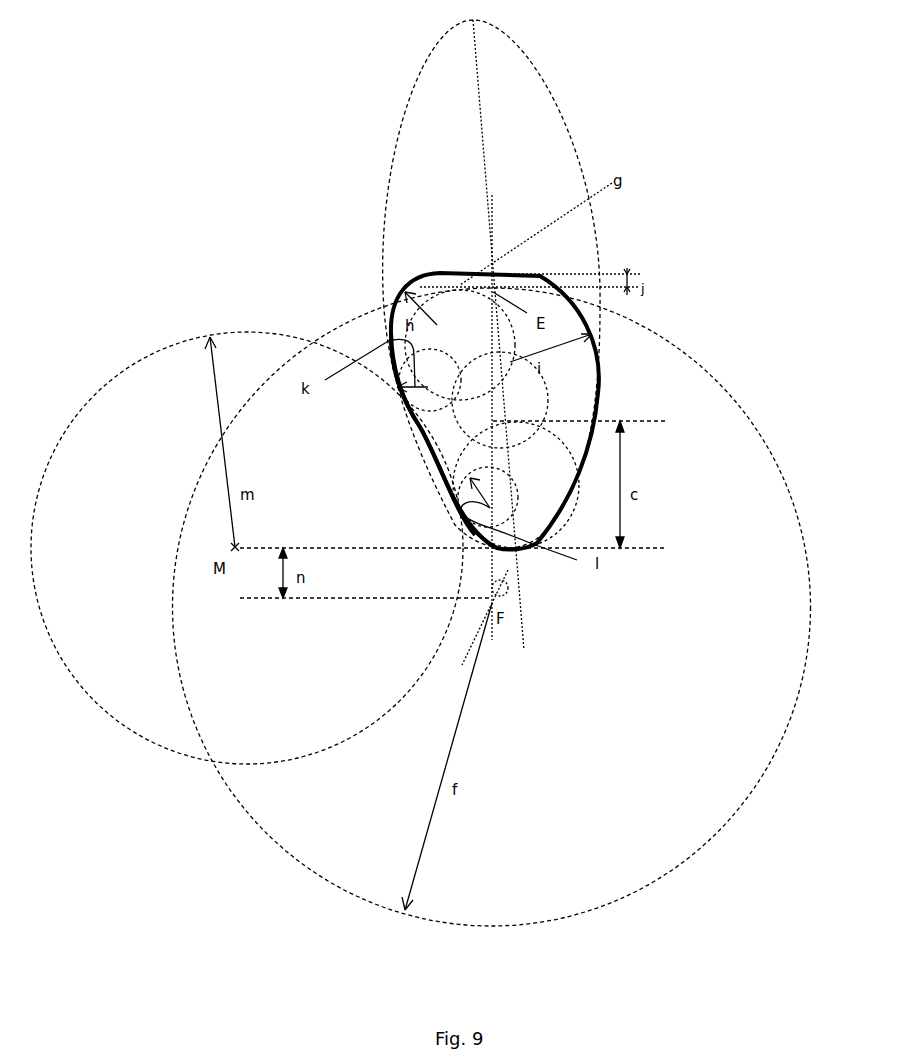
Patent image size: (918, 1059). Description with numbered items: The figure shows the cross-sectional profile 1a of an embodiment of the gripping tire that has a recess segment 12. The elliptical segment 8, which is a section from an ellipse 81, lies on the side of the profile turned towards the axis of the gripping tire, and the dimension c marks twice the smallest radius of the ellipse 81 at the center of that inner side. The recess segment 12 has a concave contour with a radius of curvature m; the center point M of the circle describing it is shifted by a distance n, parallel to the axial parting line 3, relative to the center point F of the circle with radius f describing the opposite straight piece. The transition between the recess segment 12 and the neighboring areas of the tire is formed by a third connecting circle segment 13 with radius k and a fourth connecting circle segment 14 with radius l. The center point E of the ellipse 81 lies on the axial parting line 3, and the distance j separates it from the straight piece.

The cross-sectional profile 1a is at (233, 121).
The ellipse 81 is at (541, 72).
The elliptical segment 8 is at (525, 550).
The recess segment 12 is at (433, 452).
The third connecting circle segment 13 is at (402, 403).
The fourth connecting circle segment 14 is at (460, 520).
The axial parting line 3 is at (477, 627).